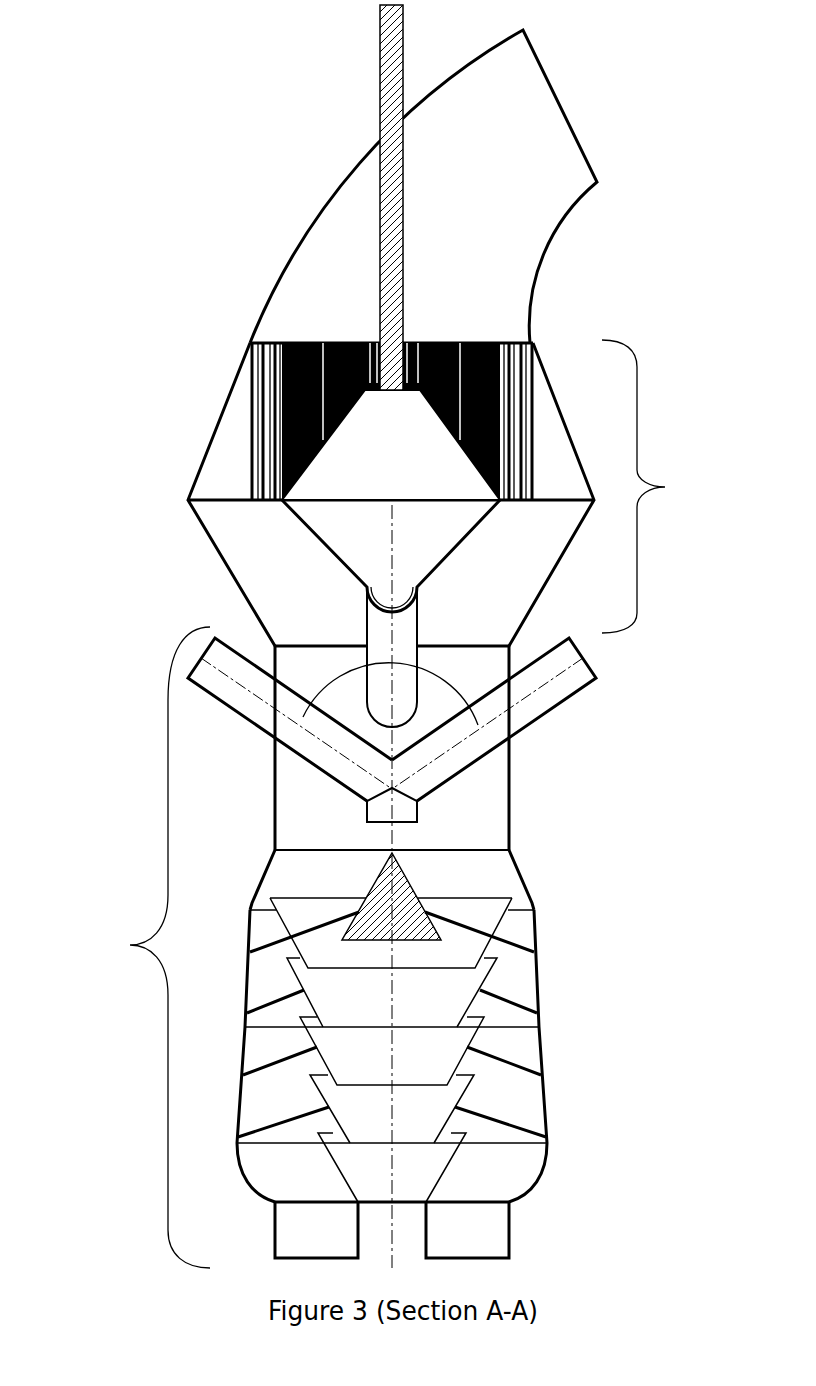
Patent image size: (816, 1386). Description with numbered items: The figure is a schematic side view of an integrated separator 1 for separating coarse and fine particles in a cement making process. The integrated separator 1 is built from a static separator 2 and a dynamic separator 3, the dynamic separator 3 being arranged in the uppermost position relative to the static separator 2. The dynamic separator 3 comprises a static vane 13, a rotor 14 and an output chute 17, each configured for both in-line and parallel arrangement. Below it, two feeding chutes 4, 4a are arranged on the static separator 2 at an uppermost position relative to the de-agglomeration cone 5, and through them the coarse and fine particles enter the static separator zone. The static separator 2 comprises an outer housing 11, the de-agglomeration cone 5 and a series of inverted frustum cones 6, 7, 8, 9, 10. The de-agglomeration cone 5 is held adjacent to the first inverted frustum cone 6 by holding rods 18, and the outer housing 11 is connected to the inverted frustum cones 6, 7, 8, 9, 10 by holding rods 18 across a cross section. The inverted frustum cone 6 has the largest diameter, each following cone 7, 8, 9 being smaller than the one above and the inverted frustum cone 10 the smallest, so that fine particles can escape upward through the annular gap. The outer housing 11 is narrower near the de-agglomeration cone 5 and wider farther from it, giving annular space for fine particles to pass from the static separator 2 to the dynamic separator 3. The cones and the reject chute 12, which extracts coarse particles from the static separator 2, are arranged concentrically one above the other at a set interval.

The integrated separator 1 is at (235, 131).
The static separator 2 is at (306, 947).
The dynamic separator 3 is at (439, 533).
The feed chute 4 is at (537, 705).
The feed chute 4a is at (267, 716).
The de-agglomeration cone 5 is at (413, 888).
The first inverted frustum cone 6 is at (460, 942).
The second inverted frustum cone 7 is at (460, 1002).
The third inverted frustum cone 8 is at (450, 1060).
The fourth inverted frustum cone 9 is at (443, 1116).
The fifth inverted frustum cone 10 is at (420, 1175).
The outer housing 11 is at (537, 928).
The reject chute 12 is at (412, 1233).
The static vane 13 is at (255, 444).
The rotor 14 is at (380, 285).
The output chute 17 is at (518, 228).
The holding rod 18 is at (527, 890).